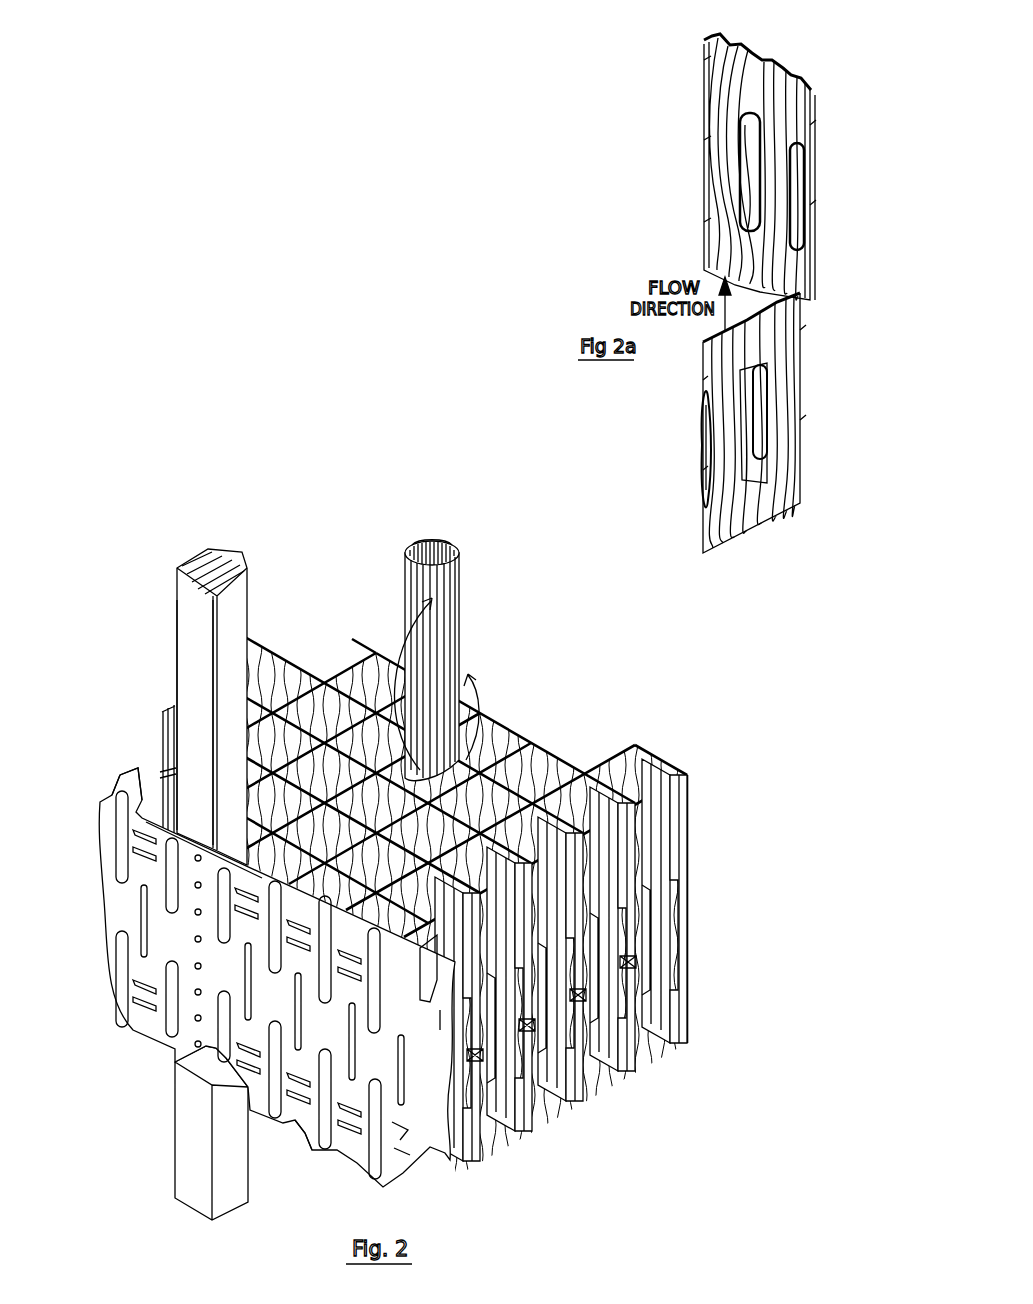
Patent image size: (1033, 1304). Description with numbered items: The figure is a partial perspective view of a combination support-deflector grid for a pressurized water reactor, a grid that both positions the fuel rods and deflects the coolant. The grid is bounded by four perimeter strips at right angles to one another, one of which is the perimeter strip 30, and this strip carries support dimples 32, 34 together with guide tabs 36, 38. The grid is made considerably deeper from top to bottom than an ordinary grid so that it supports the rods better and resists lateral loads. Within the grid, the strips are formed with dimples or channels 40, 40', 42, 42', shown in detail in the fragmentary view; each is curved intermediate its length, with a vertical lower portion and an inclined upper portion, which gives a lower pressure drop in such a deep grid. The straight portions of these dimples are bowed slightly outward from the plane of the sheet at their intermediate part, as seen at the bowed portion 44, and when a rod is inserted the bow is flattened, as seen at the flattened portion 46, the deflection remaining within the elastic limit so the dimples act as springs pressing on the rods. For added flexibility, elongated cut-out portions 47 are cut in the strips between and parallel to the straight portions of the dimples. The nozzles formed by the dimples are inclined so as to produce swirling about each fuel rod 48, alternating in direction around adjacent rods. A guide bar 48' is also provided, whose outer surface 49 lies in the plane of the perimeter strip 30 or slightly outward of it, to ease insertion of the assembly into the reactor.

In FIG. 2, the perimeter strip 30 is at (120, 905).
In FIG. 2, the support dimple 32 is at (155, 845).
In FIG. 2, the support dimple 34 is at (150, 995).
In FIG. 2, the guide tab 36 is at (135, 790).
In FIG. 2, the guide tab 38 is at (300, 1135).
In FIG. 2A, the dimple 40 is at (759, 153).
In FIG. 2A, the dimple 40' is at (693, 423).
In FIG. 2A, the dimple 42 is at (725, 139).
In FIG. 2A, the dimple 42' is at (754, 457).
In FIG. 2, the bowed portion 44 is at (580, 990).
In FIG. 2, the flattened portion 46 is at (640, 955).
In FIG. 2A, the elongated cut-out portion 47 is at (747, 153).
In FIG. 2, the fuel rod 48 is at (449, 660).
In FIG. 2, the guide bar 48' is at (244, 849).
In FIG. 2, the outer surface 49 is at (207, 639).